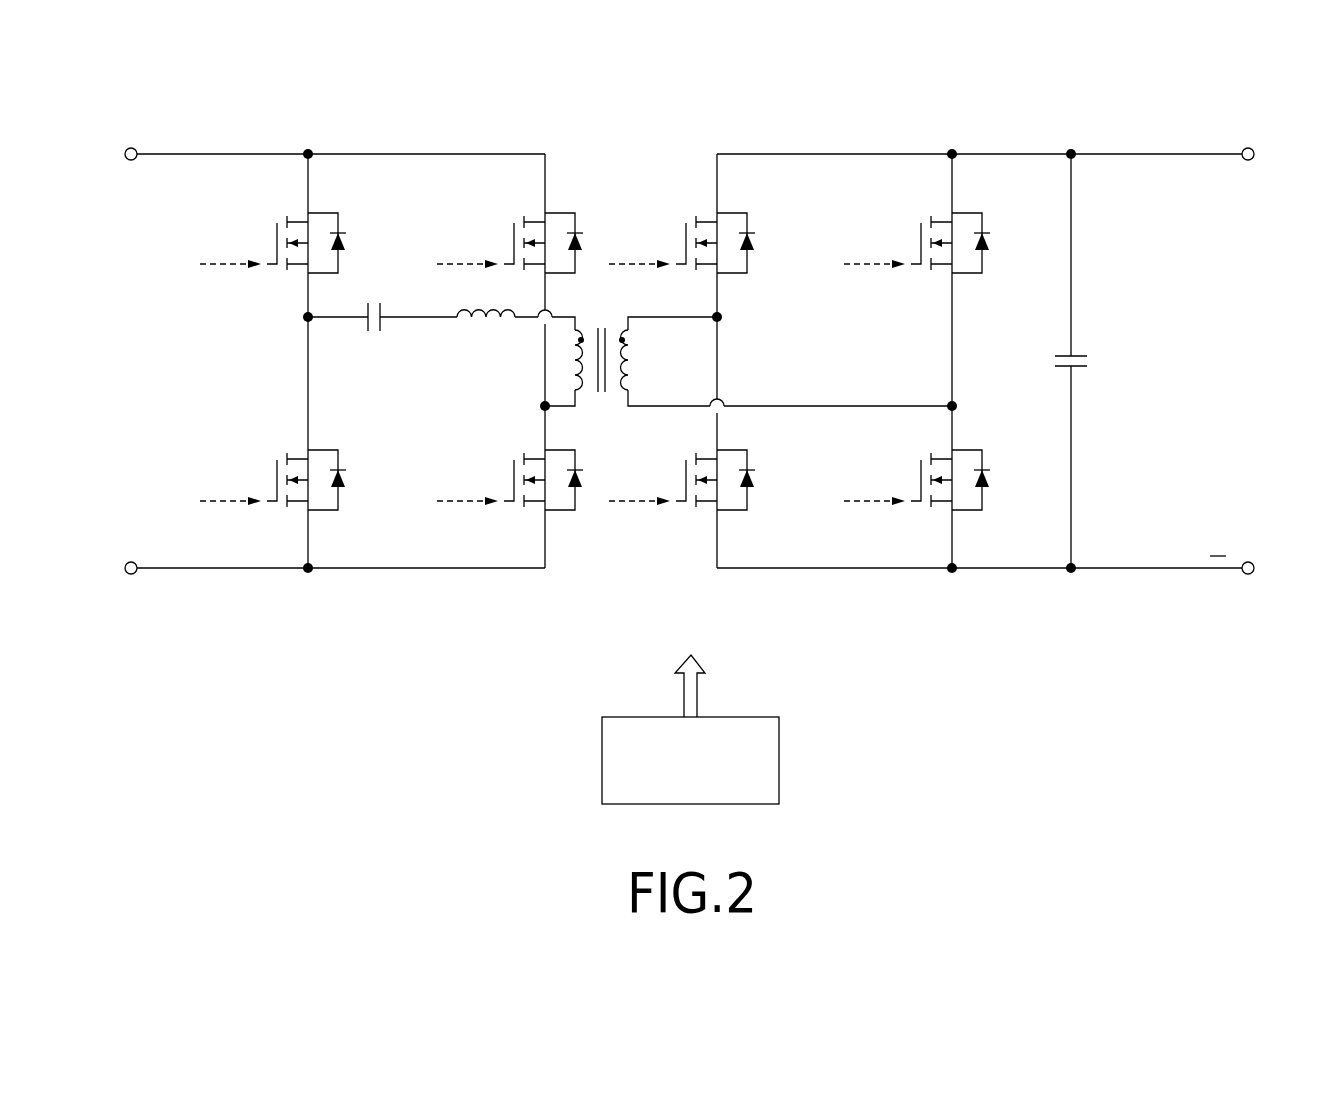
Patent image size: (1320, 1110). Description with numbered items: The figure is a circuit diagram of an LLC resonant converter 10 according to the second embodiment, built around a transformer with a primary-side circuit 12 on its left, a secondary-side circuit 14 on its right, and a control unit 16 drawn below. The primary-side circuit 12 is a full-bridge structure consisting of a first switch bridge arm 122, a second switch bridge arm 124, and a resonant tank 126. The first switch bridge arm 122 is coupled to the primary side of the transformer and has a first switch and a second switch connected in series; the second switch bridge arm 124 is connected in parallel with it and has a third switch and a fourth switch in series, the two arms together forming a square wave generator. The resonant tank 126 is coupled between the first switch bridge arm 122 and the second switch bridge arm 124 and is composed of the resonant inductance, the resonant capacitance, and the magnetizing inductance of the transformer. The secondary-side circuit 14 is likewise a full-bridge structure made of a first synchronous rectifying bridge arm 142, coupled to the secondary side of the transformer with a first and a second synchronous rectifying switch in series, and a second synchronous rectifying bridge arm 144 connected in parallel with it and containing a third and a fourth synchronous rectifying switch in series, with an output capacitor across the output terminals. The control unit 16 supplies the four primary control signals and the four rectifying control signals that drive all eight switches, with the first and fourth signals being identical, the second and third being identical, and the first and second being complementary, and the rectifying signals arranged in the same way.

The LLC resonant converter 10 is at (677, 38).
The primary-side circuit 12 is at (395, 138).
The secondary-side circuit 14 is at (848, 135).
The control unit 16 is at (719, 726).
The first switch bridge arm 122 is at (309, 578).
The second switch bridge arm 124 is at (545, 578).
The resonant tank 126 is at (465, 328).
The first synchronous rectifying bridge arm 142 is at (698, 158).
The second synchronous rectifying bridge arm 144 is at (958, 148).